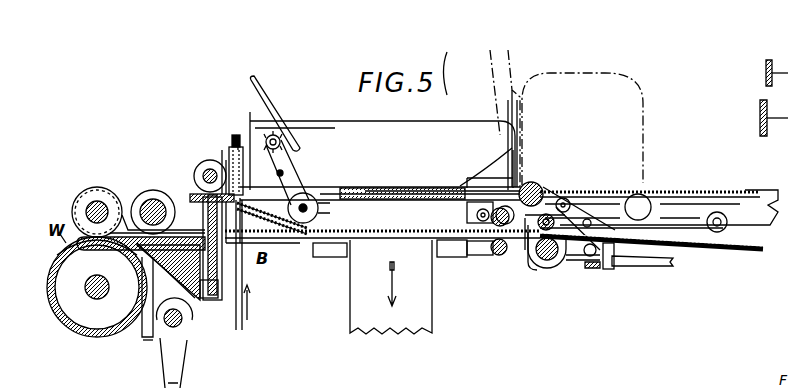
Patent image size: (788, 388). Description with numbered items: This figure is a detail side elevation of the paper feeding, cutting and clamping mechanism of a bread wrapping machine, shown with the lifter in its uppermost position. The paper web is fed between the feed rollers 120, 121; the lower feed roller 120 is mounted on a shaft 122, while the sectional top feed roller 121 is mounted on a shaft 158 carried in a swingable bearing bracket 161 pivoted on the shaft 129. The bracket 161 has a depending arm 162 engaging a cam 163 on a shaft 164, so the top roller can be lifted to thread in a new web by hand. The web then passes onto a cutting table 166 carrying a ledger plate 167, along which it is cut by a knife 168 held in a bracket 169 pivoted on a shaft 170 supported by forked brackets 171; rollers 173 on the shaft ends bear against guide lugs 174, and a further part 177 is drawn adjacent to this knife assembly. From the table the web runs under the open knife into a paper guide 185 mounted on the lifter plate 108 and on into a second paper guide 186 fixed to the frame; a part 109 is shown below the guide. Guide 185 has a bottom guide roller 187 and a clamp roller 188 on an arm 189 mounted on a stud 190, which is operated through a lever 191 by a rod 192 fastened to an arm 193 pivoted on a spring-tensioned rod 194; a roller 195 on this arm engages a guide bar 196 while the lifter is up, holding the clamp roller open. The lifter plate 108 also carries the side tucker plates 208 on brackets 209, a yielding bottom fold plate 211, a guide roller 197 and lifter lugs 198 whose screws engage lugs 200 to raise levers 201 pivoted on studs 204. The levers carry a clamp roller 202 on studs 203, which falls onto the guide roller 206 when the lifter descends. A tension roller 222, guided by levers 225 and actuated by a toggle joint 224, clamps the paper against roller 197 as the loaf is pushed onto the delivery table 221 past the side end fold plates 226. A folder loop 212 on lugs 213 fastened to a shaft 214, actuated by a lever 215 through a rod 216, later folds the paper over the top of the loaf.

The feed roller 120 is at (84, 333).
The shaft 122 is at (98, 299).
The feed roller 121 is at (81, 192).
The shaft 158 is at (100, 207).
The swingable bearing bracket 161 is at (128, 197).
The shaft 129 is at (156, 201).
The knife 168 is at (246, 264).
The roller 173 is at (206, 160).
The bracket 169 is at (200, 170).
The shaft 170 is at (204, 156).
The forked bracket 171 is at (224, 152).
The adjusting bolt 177 is at (233, 146).
The bracket 209 is at (240, 133).
The side tucker plate 208 is at (374, 109).
The guide bar 196 is at (268, 97).
The roller 195 is at (290, 145).
The rod 192 is at (366, 190).
The rod 194 is at (318, 213).
The guide lug 174 is at (266, 220).
The arm 193 is at (290, 240).
The lifter plate 108 is at (383, 185).
The lever 191 is at (455, 188).
The arm 189 is at (480, 185).
The clamp roller 188 is at (504, 185).
The stud 190 is at (467, 215).
The paper guide 185 is at (373, 244).
The paper strip 109 is at (425, 325).
The bottom guide roller 187 is at (492, 256).
The lifter lug 198 is at (508, 257).
The lug 200 is at (530, 262).
The tension roller 222 is at (537, 190).
The guide roller 197 is at (532, 181).
The bottom fold plate 211 is at (519, 152).
The toggle joint 224 is at (566, 198).
The clamp roller 202 is at (588, 218).
The lever 225 is at (552, 261).
The folder loop 212 is at (537, 272).
The guide roller 206 is at (549, 262).
The lever 215 is at (592, 258).
The stud 203 is at (592, 272).
The lug 213 is at (616, 265).
The shaft 214 is at (618, 251).
The rod 216 is at (673, 263).
The paper guide 186 is at (745, 253).
The lever 201 is at (680, 223).
The delivery table 221 is at (642, 194).
The stud 204 is at (720, 218).
The side end fold plate 226 is at (760, 210).
The cutting table 166 is at (186, 325).
The ledger plate 167 is at (193, 317).
The shaft 164 is at (176, 326).
The cam 163 is at (180, 340).
The depending arm 162 is at (144, 340).